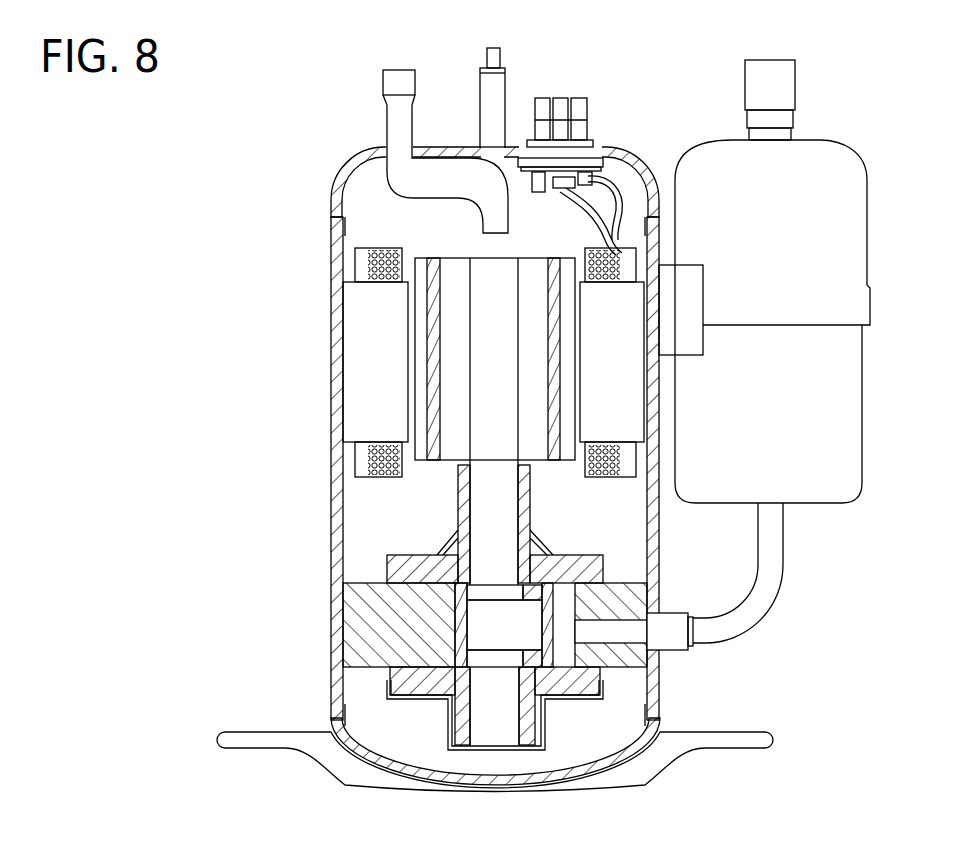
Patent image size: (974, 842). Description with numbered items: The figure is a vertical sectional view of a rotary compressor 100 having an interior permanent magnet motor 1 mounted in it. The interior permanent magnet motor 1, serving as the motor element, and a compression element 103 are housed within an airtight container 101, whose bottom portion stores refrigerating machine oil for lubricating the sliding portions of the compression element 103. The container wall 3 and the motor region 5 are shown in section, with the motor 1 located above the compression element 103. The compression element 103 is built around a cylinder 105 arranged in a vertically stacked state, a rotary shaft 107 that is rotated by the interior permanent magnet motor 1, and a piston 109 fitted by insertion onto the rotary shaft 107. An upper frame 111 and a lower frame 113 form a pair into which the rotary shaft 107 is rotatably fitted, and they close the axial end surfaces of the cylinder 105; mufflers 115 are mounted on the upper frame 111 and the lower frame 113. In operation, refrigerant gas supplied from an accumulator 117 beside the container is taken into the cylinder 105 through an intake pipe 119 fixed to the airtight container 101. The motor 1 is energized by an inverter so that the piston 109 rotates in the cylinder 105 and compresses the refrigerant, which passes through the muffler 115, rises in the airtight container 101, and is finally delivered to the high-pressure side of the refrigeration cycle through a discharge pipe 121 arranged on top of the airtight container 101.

The rotary compressor 100 is at (86, 128).
The interior permanent magnet motor 1 is at (366, 226).
The shell body 3 is at (325, 307).
The electric motor 5 is at (419, 390).
The airtight container 101 is at (352, 168).
The compression element 103 is at (352, 696).
The cylinder 105 is at (345, 583).
The rotary shaft 107 is at (487, 517).
The piston 109 is at (455, 620).
The upper frame 111 is at (558, 566).
The lower frame 113 is at (588, 688).
The muffler 115 is at (430, 546).
The accumulator 117 is at (868, 255).
The intake pipe 119 is at (783, 585).
The discharge pipe 121 is at (384, 130).